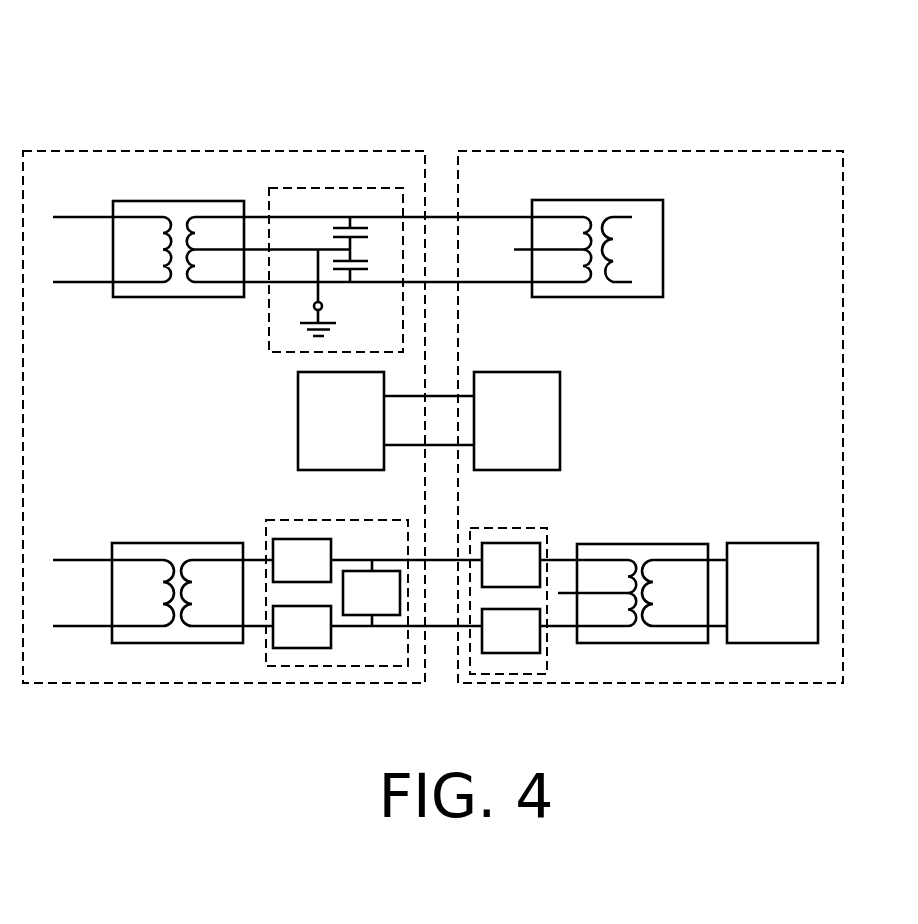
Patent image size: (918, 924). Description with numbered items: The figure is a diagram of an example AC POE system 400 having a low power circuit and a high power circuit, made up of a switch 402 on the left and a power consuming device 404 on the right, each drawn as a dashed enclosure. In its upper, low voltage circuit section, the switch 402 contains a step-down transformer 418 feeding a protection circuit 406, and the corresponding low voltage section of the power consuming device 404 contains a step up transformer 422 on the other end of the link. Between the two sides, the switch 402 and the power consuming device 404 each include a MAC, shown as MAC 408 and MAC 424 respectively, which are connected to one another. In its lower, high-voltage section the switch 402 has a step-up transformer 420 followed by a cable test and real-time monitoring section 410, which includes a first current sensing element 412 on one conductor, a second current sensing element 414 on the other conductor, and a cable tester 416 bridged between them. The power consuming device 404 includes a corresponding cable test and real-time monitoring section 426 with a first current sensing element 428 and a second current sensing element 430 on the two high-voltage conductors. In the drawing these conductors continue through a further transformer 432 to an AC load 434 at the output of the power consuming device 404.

The AC POE system 400 is at (108, 18).
The switch 402 is at (188, 150).
The power consuming device 404 is at (610, 150).
The protection circuit 406 is at (347, 263).
The MAC 408 is at (386, 421).
The cable test and real-time monitoring section 410 is at (374, 587).
The first current sensing element 412 is at (377, 560).
The second current sensing element 414 is at (377, 627).
The cable tester 416 is at (371, 593).
The step-down transformer 418 is at (187, 298).
The step-up transformer 420 is at (182, 542).
The step up transformer 422 is at (625, 298).
The MAC 424 is at (517, 421).
The cable test and real-time monitoring section 426 is at (523, 595).
The first current sensing element 428 is at (529, 565).
The second current sensing element 430 is at (529, 631).
The transformer 432 is at (622, 544).
The AC load 434 is at (772, 593).